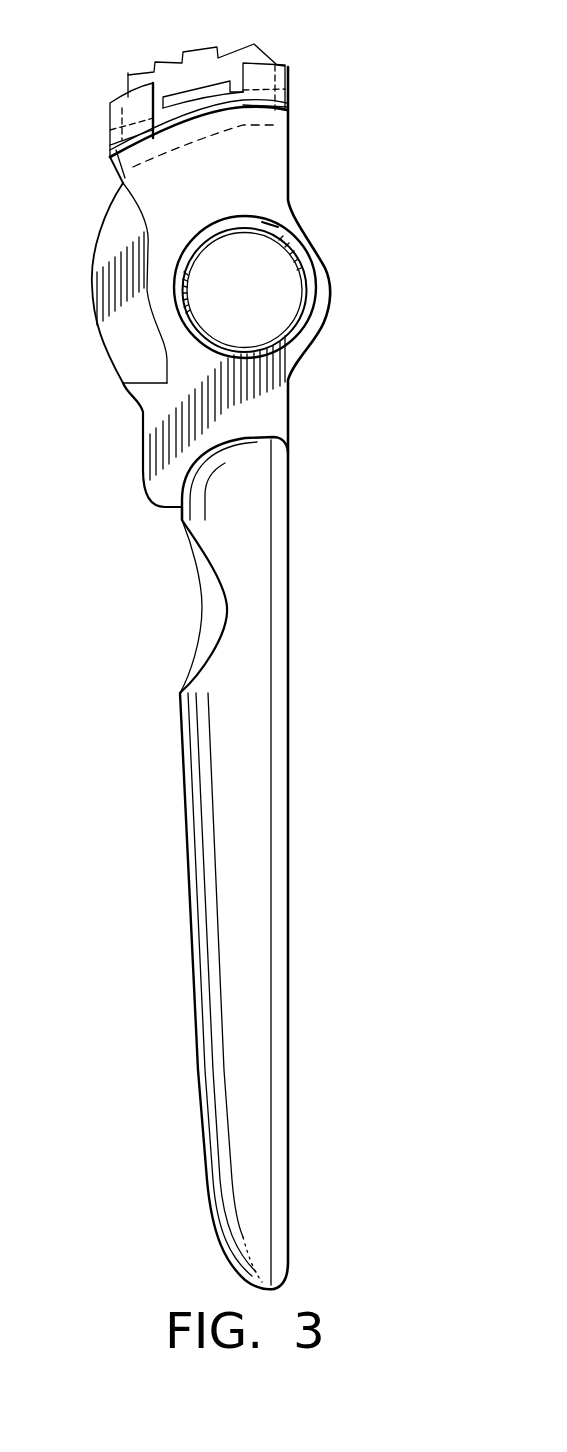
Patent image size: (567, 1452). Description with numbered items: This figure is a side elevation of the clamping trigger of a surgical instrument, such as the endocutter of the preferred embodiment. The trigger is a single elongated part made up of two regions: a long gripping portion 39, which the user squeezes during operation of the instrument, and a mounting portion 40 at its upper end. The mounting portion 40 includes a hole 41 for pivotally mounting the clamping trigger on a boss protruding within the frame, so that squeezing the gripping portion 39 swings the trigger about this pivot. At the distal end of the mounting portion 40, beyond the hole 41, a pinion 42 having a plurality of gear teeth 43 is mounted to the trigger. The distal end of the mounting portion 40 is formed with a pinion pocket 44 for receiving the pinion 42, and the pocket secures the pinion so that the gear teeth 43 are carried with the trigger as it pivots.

The gripping portion 39 is at (200, 1102).
The mounting portion 40 is at (322, 212).
The hole 41 is at (315, 295).
The pinion 42 is at (196, 67).
The gear teeth 43 is at (140, 72).
The pinion pocket 44 is at (185, 122).